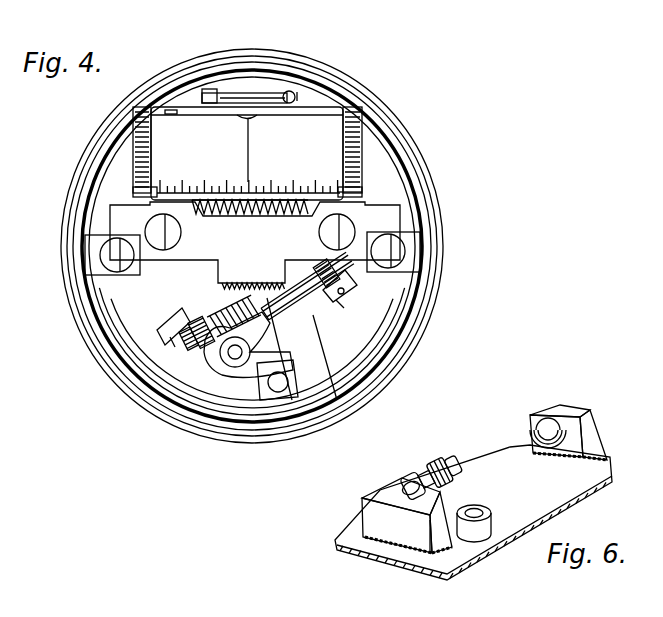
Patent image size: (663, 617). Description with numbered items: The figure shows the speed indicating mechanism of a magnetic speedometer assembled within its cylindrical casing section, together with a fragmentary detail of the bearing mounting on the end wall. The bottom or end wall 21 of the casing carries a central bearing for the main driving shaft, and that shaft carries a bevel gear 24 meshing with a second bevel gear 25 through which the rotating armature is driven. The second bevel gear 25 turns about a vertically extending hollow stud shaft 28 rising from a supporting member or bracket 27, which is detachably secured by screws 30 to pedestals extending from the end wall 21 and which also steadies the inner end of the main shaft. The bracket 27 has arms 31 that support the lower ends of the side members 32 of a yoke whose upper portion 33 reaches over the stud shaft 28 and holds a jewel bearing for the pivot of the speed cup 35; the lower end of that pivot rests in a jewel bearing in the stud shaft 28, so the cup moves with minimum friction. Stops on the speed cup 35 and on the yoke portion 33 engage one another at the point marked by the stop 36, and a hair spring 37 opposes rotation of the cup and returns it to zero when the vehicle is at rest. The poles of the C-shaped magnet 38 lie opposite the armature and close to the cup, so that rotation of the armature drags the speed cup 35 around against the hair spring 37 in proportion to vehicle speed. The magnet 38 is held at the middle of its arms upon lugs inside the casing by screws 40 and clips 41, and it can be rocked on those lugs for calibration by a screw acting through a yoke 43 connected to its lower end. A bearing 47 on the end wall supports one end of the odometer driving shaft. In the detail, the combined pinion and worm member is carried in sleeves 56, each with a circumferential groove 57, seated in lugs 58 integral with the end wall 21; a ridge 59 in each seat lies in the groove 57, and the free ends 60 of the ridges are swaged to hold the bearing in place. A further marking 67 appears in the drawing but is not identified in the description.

In FIG. 6, the end wall 21 is at (532, 507).
In FIG. 4, the bevel gear 24 is at (327, 350).
In FIG. 4, the second bevel gear 25 is at (125, 192).
In FIG. 4, the supporting member or bracket 27 is at (118, 330).
In FIG. 4, the hollow stud shaft 28 is at (340, 190).
In FIG. 4, the screws 30 is at (217, 243).
In FIG. 4, the arms 31 is at (125, 218).
In FIG. 4, the side members 32 is at (140, 160).
In FIG. 4, the upper portion of yoke 33 is at (272, 113).
In FIG. 4, the speed cup 35 is at (310, 127).
In FIG. 4, the stop 36 is at (170, 112).
In FIG. 4, the hair spring 37 is at (268, 90).
In FIG. 4, the C-shaped magnet 38 is at (407, 283).
In FIG. 4, the screws 40 is at (105, 255).
In FIG. 4, the clips 41 is at (95, 267).
In FIG. 4, the yoke 43 is at (280, 410).
In FIG. 6, the bearing 47 is at (490, 510).
In FIG. 4, the sleeves 56 is at (193, 363).
In FIG. 6, the sleeves 56 is at (402, 493).
In FIG. 4, the groove 57 is at (187, 365).
In FIG. 6, the groove 57 is at (415, 480).
In FIG. 4, the lugs 58 is at (205, 375).
In FIG. 6, the lugs 58 is at (412, 532).
In FIG. 6, the ridge 59 is at (560, 422).
In FIG. 4, the free ends 60 is at (217, 370).
In FIG. 6, the free ends 60 is at (550, 415).
In FIG. 4, the lever 67 is at (200, 616).